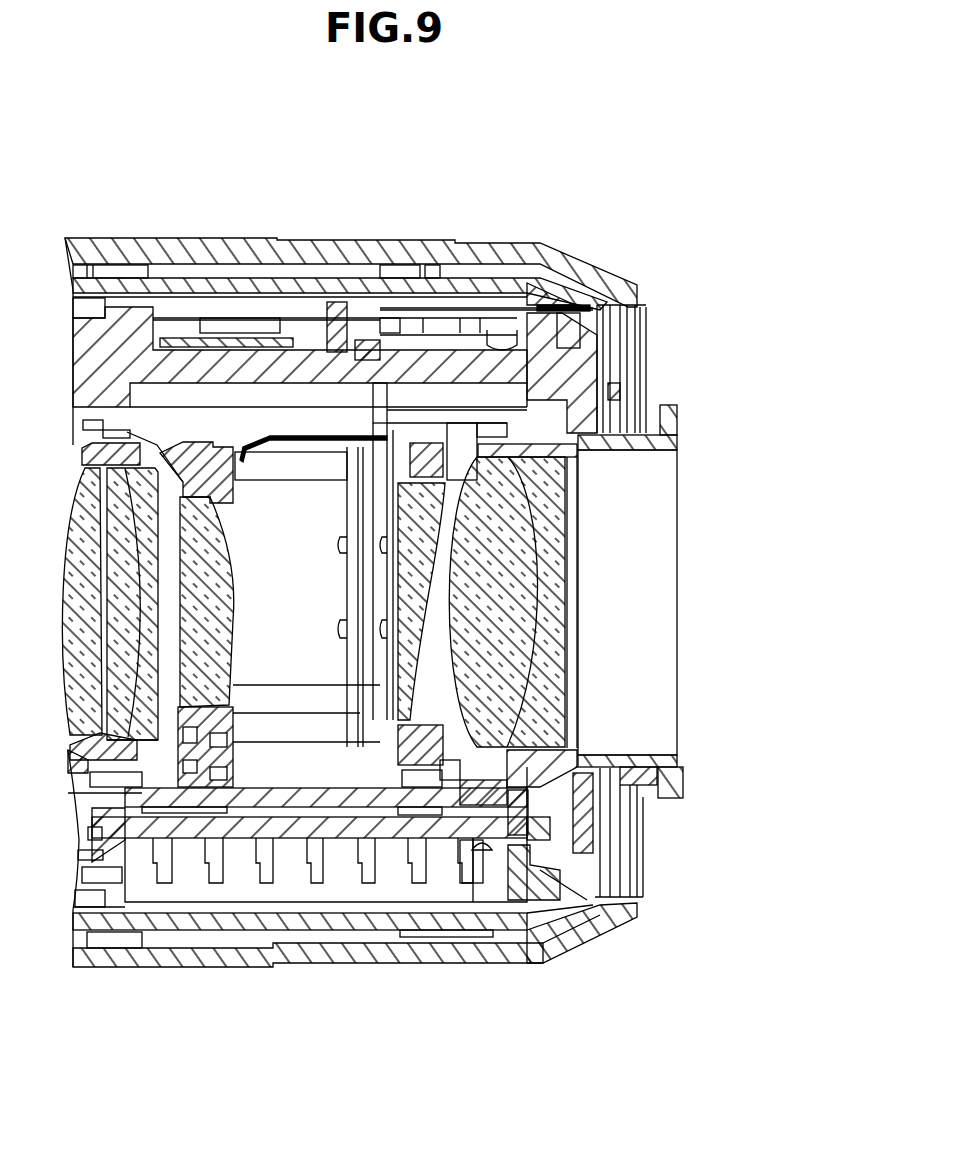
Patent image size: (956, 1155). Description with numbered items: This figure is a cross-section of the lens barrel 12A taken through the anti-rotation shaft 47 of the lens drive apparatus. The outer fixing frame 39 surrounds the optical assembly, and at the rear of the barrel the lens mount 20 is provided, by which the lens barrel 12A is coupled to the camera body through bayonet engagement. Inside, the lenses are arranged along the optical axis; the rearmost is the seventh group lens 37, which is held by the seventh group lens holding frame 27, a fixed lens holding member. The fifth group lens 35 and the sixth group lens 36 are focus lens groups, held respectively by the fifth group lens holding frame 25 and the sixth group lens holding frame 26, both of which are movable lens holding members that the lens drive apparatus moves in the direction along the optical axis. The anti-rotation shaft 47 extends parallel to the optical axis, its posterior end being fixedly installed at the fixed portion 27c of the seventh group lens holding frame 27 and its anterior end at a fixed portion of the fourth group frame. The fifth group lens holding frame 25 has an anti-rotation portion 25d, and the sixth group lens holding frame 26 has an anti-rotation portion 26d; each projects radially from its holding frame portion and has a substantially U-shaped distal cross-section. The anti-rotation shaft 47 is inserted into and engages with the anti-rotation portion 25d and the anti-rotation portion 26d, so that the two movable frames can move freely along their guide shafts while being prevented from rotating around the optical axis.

The lens barrel 12A is at (558, 150).
The fixing frame 39 is at (293, 252).
The lens mount 20 is at (676, 424).
The seventh group lens 37 is at (512, 572).
The seventh group lens holding frame 27 is at (553, 748).
The fixed portion 27c is at (532, 812).
The anti-rotation portion 25d is at (178, 788).
The fifth group lens holding frame 25 is at (205, 762).
The fifth group lens 35 is at (232, 703).
The anti-rotation shaft 47 is at (285, 800).
The sixth group lens 36 is at (412, 750).
The sixth group lens holding frame 26 is at (450, 790).
The anti-rotation portion 26d is at (483, 852).